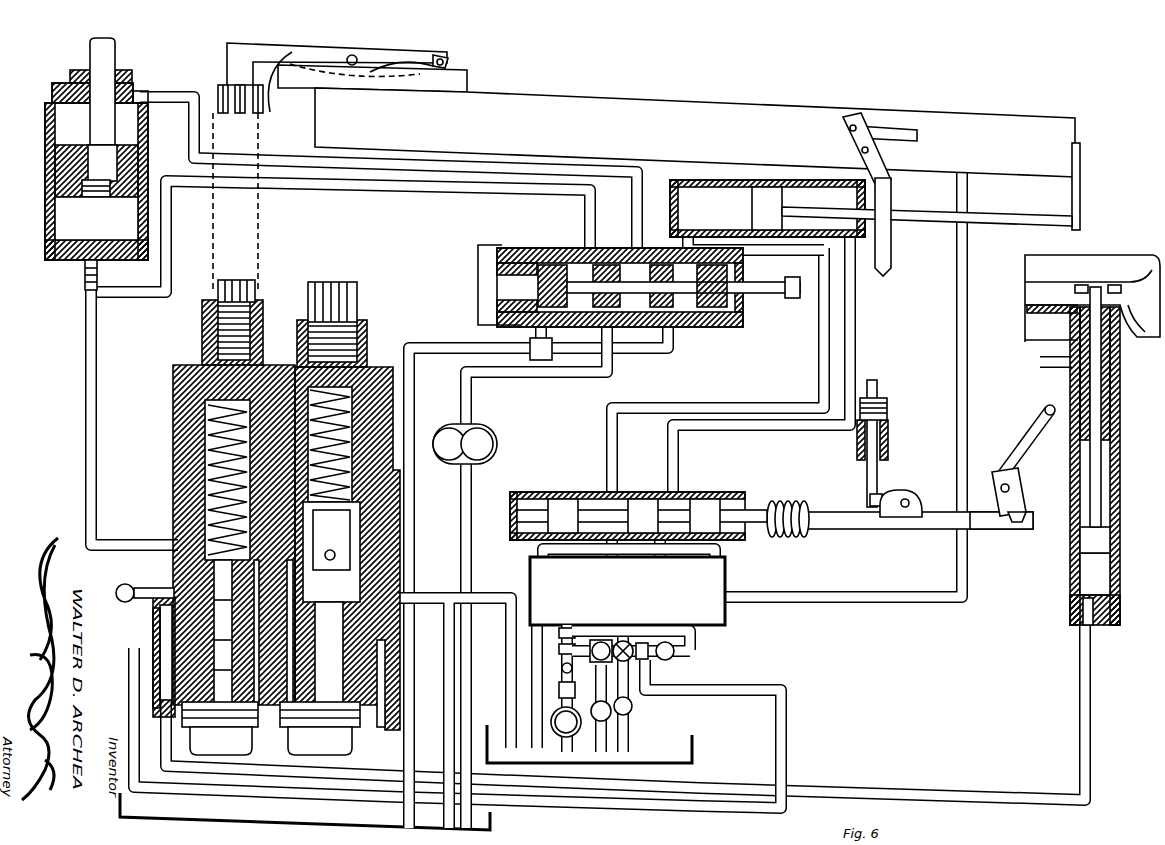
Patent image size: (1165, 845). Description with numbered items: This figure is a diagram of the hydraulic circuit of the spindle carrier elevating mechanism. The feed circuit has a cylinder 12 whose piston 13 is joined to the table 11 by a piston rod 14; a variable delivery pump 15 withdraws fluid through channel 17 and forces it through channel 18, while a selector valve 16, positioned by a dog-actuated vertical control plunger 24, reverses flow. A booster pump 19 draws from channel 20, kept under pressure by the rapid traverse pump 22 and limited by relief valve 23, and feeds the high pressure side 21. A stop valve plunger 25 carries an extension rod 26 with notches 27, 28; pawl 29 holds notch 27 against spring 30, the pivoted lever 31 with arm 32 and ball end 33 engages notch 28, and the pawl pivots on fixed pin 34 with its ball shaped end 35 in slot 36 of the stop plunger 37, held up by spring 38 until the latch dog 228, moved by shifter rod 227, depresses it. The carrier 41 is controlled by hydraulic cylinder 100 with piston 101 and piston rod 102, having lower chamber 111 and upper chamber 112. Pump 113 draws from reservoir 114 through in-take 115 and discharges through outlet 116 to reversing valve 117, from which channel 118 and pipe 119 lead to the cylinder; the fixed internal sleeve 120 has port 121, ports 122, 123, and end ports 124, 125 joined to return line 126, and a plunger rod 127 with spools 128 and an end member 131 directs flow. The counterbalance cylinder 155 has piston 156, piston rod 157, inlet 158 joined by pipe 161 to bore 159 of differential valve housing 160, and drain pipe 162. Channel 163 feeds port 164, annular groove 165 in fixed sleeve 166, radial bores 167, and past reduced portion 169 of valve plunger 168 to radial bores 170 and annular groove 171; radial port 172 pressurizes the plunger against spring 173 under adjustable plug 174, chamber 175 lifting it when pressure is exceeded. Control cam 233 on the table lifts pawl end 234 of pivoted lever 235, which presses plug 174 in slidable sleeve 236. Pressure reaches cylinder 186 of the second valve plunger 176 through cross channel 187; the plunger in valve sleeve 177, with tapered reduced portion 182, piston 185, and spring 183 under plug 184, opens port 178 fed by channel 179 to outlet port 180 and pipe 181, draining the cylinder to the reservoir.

The table 11 is at (748, 90).
The cylinder 12 is at (708, 180).
The piston 13 is at (765, 190).
The piston rod 14 is at (900, 220).
The variable delivery pump 15 is at (672, 656).
The selector valve 16 is at (727, 614).
The channel 17 is at (606, 442).
The channel 18 is at (680, 456).
The booster pump 19 is at (596, 660).
The channel 20 is at (572, 672).
The high pressure side 21 is at (630, 664).
The rapid traverse pump 22 is at (572, 730).
The relief valve 23 is at (608, 716).
The vertical control plunger 24 is at (966, 576).
The stop valve plunger 25 is at (570, 500).
The extension rod 26 is at (968, 532).
The notch 27 is at (920, 530).
The notch 28 is at (1000, 514).
The pawl 29 is at (909, 500).
The spring 30 is at (790, 538).
The pivoted lever 31 is at (1028, 460).
The arm 32 is at (1024, 494).
The ball end 33 is at (1024, 512).
The fixed pin 34 is at (916, 492).
The ball shaped end 35 is at (888, 494).
The slot 36 is at (868, 496).
The stop plunger 37 is at (892, 262).
The spring 38 is at (888, 408).
The spindle carrier 41 is at (1046, 258).
The hydraulic cylinder 100 is at (82, 164).
The piston 101 is at (60, 162).
The piston rod 102 is at (112, 49).
The lower chamber 111 is at (60, 222).
The upper chamber 112 is at (58, 122).
The pump 113 is at (490, 430).
The reservoir 114 is at (493, 824).
The in-take 115 is at (472, 477).
The outlet 116 is at (540, 380).
The reversing valve 117 is at (728, 330).
The channel 118 is at (84, 273).
The pipe 119 is at (190, 128).
The fixed internal sleeve 120 is at (646, 295).
The port 121 is at (614, 355).
The port 122 is at (584, 258).
The port 123 is at (636, 256).
The port 124 is at (515, 344).
The port 125 is at (678, 344).
The return line 126 is at (413, 491).
The plunger rod 127 is at (760, 252).
The spools 128 is at (536, 258).
The valve stem knob 131 is at (792, 300).
The cylinder 155 is at (1080, 570).
The piston 156 is at (1080, 543).
The piston rod 157 is at (1080, 515).
The inlet 158 is at (1072, 610).
The bore 159 is at (160, 605).
The differential valve housing 160 is at (214, 498).
The pipe 161 is at (1030, 793).
The drain pipe 162 is at (1050, 366).
The channel 163 is at (787, 733).
The port 164 is at (152, 630).
The annular groove 165 is at (152, 660).
The fixed sleeve 166 is at (240, 760).
The radial bores 167 is at (160, 685).
The valve plunger 168 is at (215, 575).
The reduced portion 169 is at (225, 590).
The radial bores 170 is at (150, 588).
The annular groove 171 is at (118, 590).
The radial port 172 is at (165, 700).
The spring 173 is at (205, 446).
The adjustable plug 174 is at (202, 345).
The chamber 175 is at (225, 740).
The valve plunger 176 is at (380, 530).
The valve sleeve 177 is at (370, 690).
The port 178 is at (360, 560).
The channel 179 is at (84, 438).
The outlet port 180 is at (360, 625).
The pipe 181 is at (440, 594).
The tapered reduced portion 182 is at (402, 580).
The spring 183 is at (375, 360).
The plug 184 is at (370, 335).
The piston 185 is at (370, 660).
The cylinder 186 is at (345, 735).
The cross channel 187 is at (262, 730).
The shifter rod 227 is at (900, 126).
The latch dog 228 is at (878, 164).
The variable pressure control cam 233 is at (458, 84).
The pawl end 234 is at (450, 59).
The pivoted lever 235 is at (255, 171).
The slidable sleeve 236 is at (202, 328).